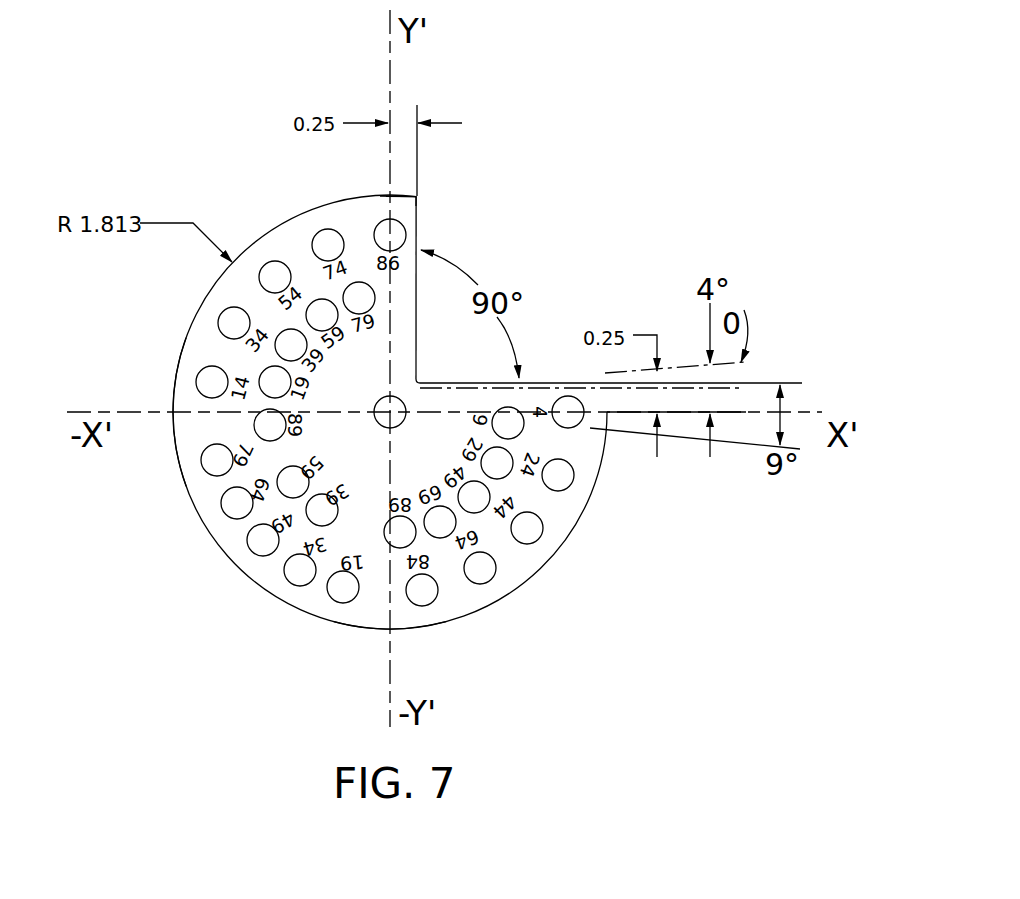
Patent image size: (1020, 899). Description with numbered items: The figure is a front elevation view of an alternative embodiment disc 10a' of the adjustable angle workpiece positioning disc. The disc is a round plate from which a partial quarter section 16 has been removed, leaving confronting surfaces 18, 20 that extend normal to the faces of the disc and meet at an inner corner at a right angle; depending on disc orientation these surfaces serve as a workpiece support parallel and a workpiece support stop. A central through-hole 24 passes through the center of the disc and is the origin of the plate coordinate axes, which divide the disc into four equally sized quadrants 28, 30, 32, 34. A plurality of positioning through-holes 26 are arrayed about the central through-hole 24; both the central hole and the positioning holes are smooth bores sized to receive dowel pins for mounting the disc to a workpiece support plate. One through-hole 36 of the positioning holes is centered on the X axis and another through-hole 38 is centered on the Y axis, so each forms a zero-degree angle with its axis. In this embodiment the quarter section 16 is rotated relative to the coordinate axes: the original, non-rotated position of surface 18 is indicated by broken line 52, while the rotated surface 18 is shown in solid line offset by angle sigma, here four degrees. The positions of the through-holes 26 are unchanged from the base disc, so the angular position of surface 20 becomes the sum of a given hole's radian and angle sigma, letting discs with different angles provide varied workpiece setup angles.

The alternative embodiment disc 10a' is at (390, 354).
The partial quarter section 16 is at (553, 322).
The confronting surface 18 is at (420, 222).
The confronting surface 20 is at (468, 382).
The central through-hole 24 is at (381, 426).
The positioning through-holes 26 is at (275, 261).
The quadrant 28 is at (405, 193).
The quadrant 30 is at (443, 624).
The quadrant 32 is at (181, 480).
The quadrant 34 is at (174, 374).
The through-hole 36 is at (603, 384).
The through-hole 38 is at (385, 221).
The broken line 52 is at (742, 391).